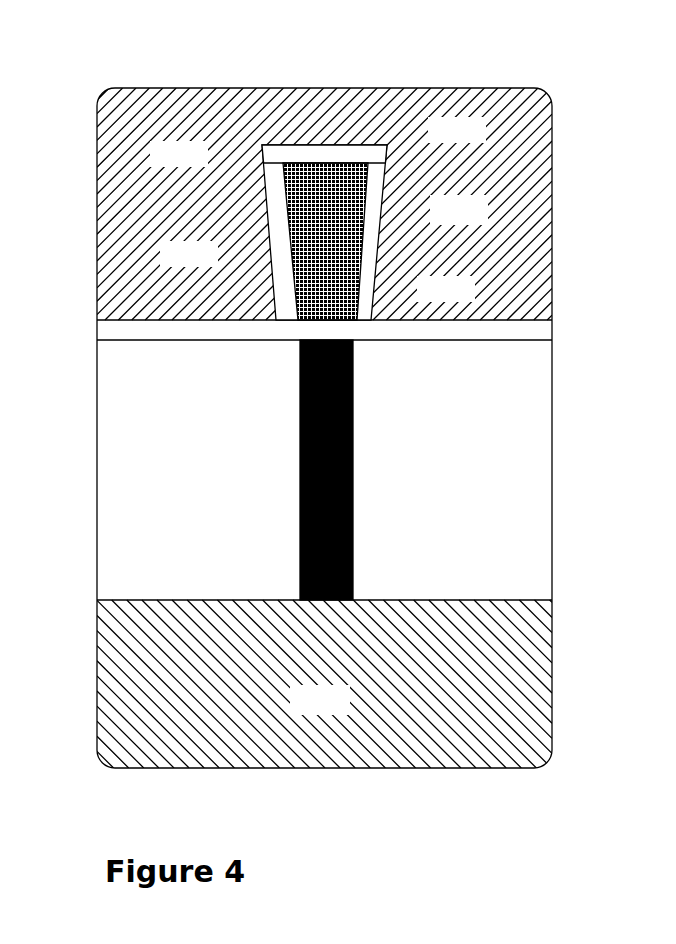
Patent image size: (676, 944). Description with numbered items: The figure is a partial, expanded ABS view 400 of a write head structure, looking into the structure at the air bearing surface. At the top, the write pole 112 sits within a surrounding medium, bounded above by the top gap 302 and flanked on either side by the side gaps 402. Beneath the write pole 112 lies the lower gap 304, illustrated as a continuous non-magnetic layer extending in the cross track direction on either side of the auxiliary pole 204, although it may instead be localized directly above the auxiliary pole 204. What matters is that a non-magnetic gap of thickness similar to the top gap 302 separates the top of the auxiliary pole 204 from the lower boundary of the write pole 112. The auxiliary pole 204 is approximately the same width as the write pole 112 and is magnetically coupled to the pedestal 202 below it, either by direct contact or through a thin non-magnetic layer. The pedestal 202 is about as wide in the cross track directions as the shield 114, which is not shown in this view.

The partial expanded ABS view 400 is at (535, 62).
The shield 114 is at (483, 223).
The pedestal 202 is at (345, 713).
The lower gap 304 is at (553, 328).
The auxiliary pole 204 is at (330, 483).
The side gaps 402 is at (272, 195).
The top gap 302 is at (387, 147).
The write pole 112 is at (323, 206).